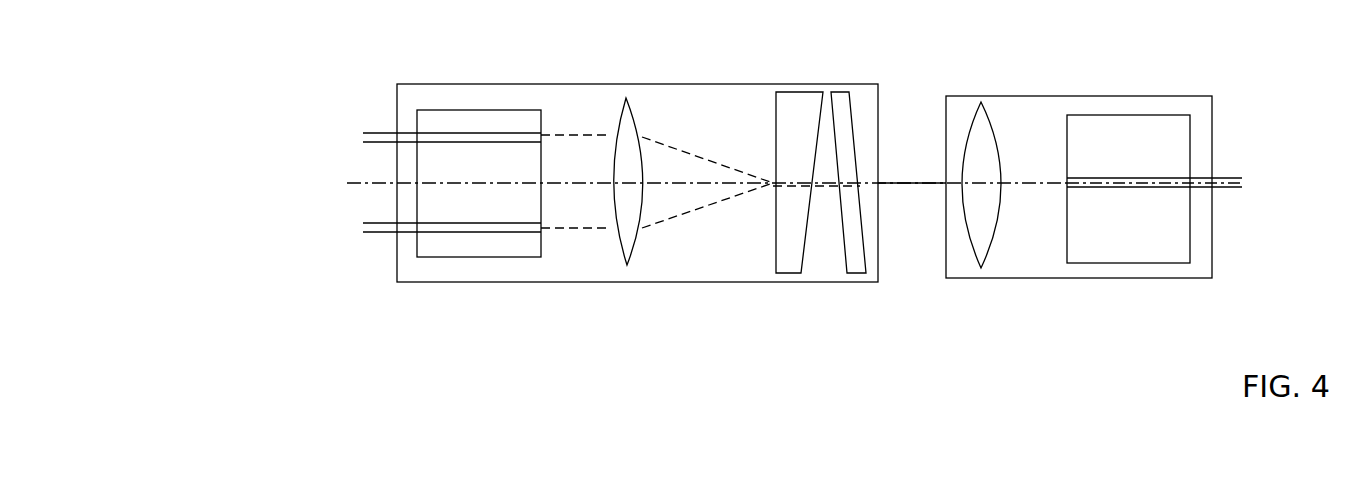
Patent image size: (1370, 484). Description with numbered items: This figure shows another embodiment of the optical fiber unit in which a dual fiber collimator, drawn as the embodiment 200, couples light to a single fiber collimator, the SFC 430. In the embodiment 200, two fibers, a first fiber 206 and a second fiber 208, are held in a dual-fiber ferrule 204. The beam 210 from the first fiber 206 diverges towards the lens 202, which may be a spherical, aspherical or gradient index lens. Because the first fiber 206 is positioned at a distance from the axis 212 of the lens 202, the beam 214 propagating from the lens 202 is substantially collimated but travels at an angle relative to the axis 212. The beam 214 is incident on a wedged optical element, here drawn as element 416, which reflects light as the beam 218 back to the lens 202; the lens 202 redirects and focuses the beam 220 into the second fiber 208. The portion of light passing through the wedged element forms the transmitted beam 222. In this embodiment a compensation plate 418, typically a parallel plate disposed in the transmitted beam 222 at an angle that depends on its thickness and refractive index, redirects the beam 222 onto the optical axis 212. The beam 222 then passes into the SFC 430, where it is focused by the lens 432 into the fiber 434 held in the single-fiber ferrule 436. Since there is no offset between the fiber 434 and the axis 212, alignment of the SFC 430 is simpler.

The embodiment 200 is at (447, 93).
The lens 202 is at (633, 117).
The dual-fiber ferrule 204 is at (498, 108).
The first fiber 206 is at (377, 132).
The second fiber 208 is at (385, 235).
The beam 210 is at (580, 135).
The axis 212 is at (355, 183).
The beam 214 is at (687, 148).
The beam 218 is at (682, 215).
The beam 220 is at (580, 228).
The transmitted beam 222 is at (912, 183).
The first wedge prism 416 is at (793, 92).
The compensation plate 418 is at (840, 92).
The SFC 430 is at (1098, 93).
The lens 432 is at (987, 115).
The fiber 434 is at (1225, 190).
The single-fiber ferrule 436 is at (1154, 263).